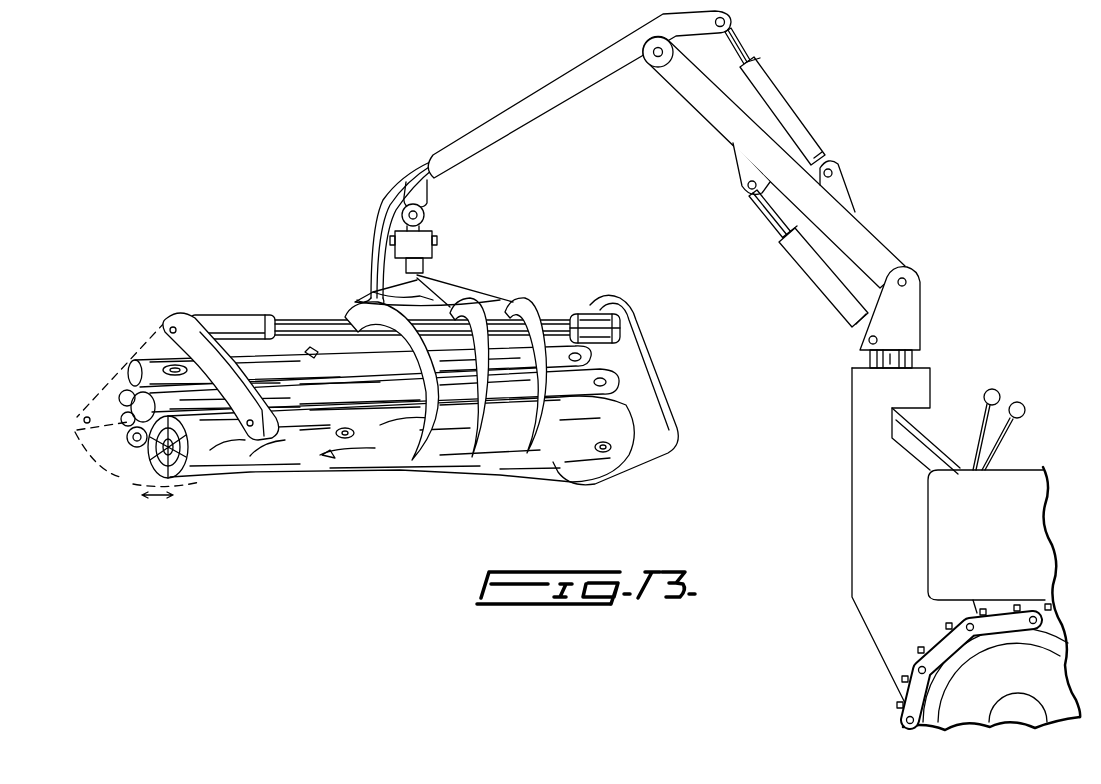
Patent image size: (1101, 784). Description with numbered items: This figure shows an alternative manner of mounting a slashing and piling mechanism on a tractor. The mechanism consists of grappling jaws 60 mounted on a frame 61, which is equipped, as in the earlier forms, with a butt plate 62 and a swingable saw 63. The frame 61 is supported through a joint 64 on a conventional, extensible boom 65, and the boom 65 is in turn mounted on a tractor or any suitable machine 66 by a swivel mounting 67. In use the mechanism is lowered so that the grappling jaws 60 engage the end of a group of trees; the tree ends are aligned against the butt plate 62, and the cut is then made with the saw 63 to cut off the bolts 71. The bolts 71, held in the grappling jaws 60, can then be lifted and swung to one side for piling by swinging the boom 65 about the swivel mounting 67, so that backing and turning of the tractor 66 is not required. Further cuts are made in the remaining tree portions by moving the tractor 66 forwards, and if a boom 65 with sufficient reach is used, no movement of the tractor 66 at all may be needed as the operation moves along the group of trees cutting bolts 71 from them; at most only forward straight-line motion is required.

The grappling jaws 60 is at (527, 455).
The frame 61 is at (547, 323).
The butt plate 62 is at (635, 362).
The swingable saw 63 is at (197, 357).
The joint 64 is at (424, 215).
The extensible boom 65 is at (608, 88).
The tractor 66 is at (1025, 483).
The swivel mounting 67 is at (917, 362).
The bolts 71 is at (337, 462).